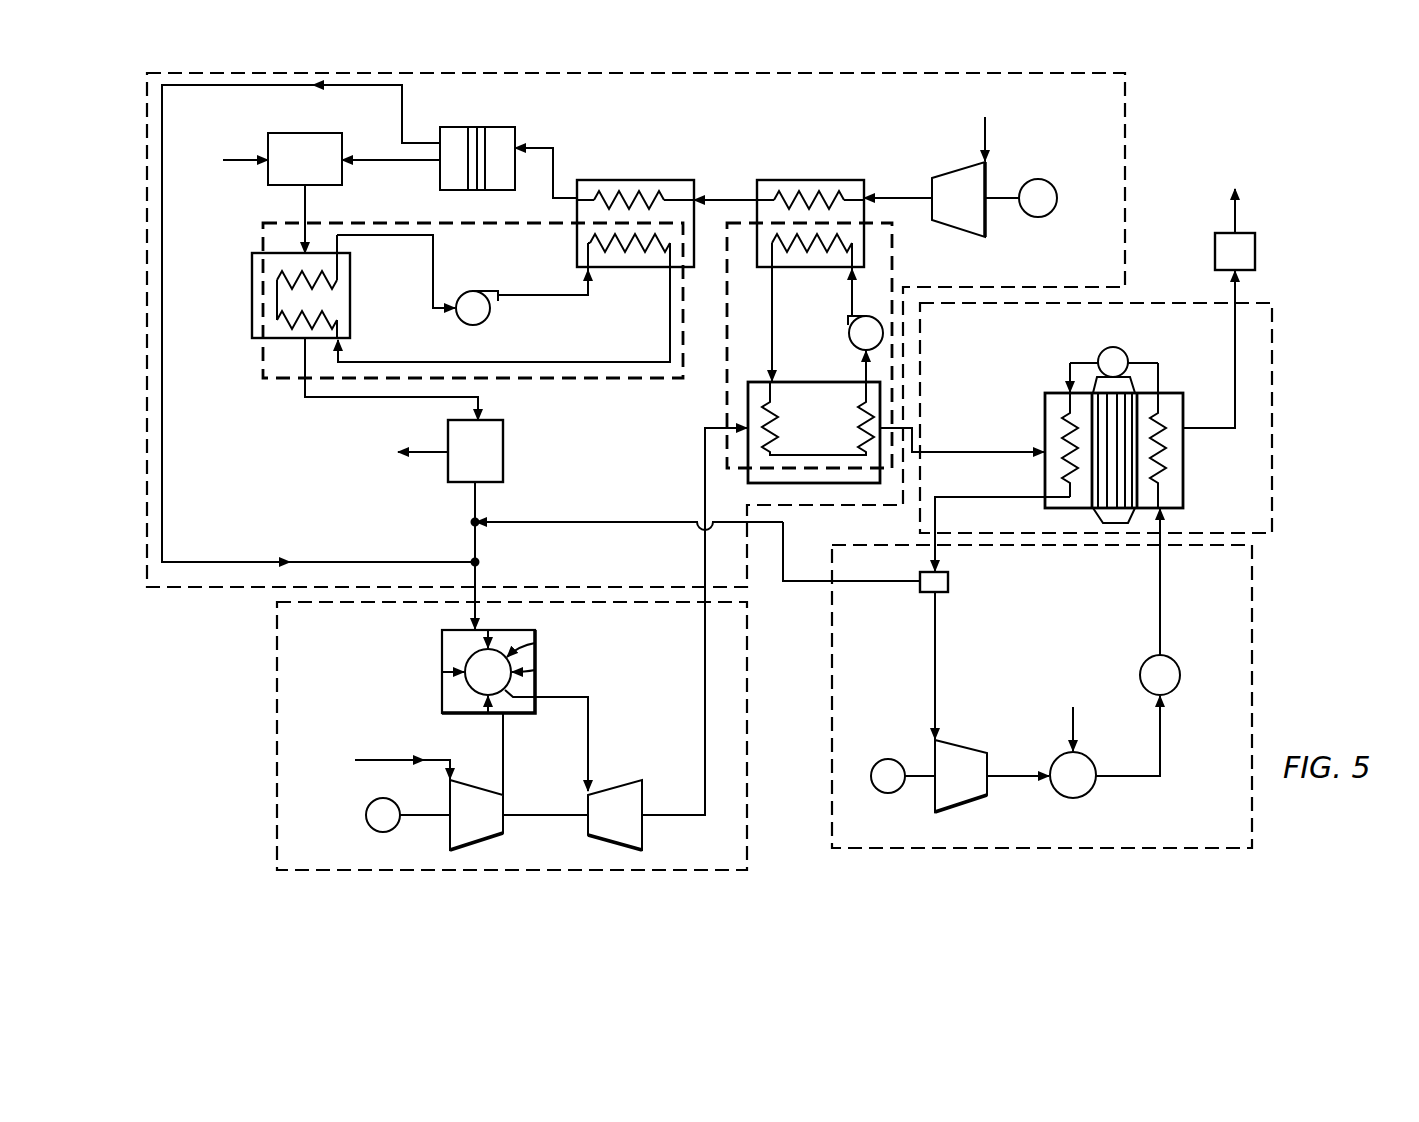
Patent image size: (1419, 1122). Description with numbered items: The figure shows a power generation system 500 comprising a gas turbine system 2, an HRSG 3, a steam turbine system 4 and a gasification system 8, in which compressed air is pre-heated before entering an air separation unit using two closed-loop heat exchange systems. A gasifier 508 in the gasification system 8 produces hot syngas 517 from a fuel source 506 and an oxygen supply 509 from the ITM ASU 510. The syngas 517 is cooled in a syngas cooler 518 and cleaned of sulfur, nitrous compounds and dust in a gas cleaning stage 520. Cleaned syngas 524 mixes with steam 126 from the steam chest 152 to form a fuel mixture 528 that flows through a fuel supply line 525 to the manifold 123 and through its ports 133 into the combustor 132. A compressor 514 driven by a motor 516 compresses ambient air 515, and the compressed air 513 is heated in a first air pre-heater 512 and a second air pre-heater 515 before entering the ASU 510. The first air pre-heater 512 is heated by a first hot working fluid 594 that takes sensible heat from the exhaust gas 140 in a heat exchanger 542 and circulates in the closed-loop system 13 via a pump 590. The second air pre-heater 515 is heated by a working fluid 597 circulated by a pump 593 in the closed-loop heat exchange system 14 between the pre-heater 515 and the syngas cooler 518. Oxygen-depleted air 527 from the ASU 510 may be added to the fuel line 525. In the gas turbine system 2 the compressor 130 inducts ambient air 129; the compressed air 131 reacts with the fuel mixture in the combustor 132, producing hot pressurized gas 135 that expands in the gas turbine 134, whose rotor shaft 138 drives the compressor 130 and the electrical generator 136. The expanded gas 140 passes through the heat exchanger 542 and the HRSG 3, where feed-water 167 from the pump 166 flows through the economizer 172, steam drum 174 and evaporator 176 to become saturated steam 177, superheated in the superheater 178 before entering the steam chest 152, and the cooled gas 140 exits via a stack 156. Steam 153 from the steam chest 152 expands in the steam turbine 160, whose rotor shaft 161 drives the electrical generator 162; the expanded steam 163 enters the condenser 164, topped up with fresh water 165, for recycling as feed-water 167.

The gas turbine system 2 is at (277, 672).
The heat recovery steam generator 3 is at (1272, 372).
The steam turbine system 4 is at (1252, 605).
The gasification system 8 is at (1125, 113).
The closed-loop system 13 is at (893, 265).
The closed-loop heat exchange system 14 is at (263, 365).
The fuel manifold 123 is at (441, 641).
The steam 126 is at (553, 515).
The ambient air 129 is at (397, 750).
The air compressor 130 is at (449, 838).
The compressed air 131 is at (516, 758).
The combustor 132 is at (535, 643).
The ports 133 is at (535, 670).
The gas turbine 134 is at (642, 838).
The hot pressurized gas 135 is at (600, 731).
The electrical generator 136 is at (368, 803).
The rotor shaft 138 is at (574, 817).
The expanded exhaust gas 140 is at (693, 738).
The steam chest 152 is at (948, 580).
The steam 153 is at (947, 675).
The stack 156 is at (1255, 253).
The steam turbine 160 is at (961, 806).
The rotor shaft 161 is at (918, 792).
The electrical generator 162 is at (910, 760).
The expanded steam 163 is at (1033, 762).
The condenser 164 is at (1089, 794).
The fresh water 165 is at (1077, 722).
The feed-water pump 166 is at (1145, 659).
The feed-water 167 is at (1172, 599).
The economizer 172 is at (1169, 440).
The steam drum 174 is at (1118, 347).
The evaporator 176 is at (1093, 490).
The saturated steam 177 is at (1082, 336).
The superheater 178 is at (1062, 437).
The power generation system 500 is at (1302, 119).
The fuel source 506 is at (220, 160).
The gasifier 508 is at (305, 132).
The oxygen supply 509 is at (387, 170).
The ITM air separation unit 510 is at (490, 127).
The first air pre-heater 512 is at (805, 179).
The compressed air 513 is at (533, 141).
The compressor 514 is at (960, 168).
The second air pre-heater 515 is at (661, 179).
The motor 516 is at (1040, 217).
The syngas 517 is at (290, 217).
The syngas cooler 518 is at (252, 290).
The gas cleaning stage 520 is at (503, 452).
The cleaned syngas 524 is at (460, 513).
The fuel supply line 525 is at (473, 546).
The oxygen-depleted air 527 is at (257, 552).
The fuel mixture 528 is at (488, 556).
The heat exchanger 542 is at (746, 413).
The pump 590 is at (883, 323).
The pump 593 is at (487, 321).
The first hot working fluid 594 is at (842, 283).
The working fluid 597 is at (413, 245).